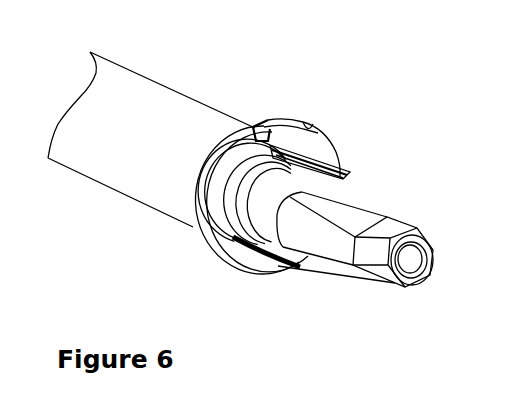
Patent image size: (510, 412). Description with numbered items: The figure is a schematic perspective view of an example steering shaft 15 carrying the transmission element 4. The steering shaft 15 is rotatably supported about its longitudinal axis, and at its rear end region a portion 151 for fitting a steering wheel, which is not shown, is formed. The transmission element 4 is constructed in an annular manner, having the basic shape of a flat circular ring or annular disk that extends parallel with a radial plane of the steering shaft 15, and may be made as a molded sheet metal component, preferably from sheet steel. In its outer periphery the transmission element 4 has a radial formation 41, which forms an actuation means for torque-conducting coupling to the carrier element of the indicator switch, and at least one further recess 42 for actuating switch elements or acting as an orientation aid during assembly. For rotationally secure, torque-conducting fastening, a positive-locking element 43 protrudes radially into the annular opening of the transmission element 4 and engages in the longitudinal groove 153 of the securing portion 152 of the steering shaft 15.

The steering shaft 15 is at (140, 103).
The longitudinal groove 153 is at (277, 153).
The securing portion 152 is at (235, 197).
The transmission element 4 is at (290, 141).
The radial formation 41 is at (256, 119).
The recess 42 is at (316, 126).
The positive-locking element 43 is at (276, 148).
The portion for fitting a steering wheel 151 is at (332, 240).